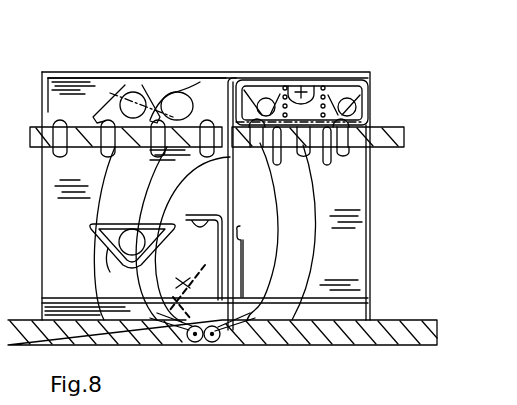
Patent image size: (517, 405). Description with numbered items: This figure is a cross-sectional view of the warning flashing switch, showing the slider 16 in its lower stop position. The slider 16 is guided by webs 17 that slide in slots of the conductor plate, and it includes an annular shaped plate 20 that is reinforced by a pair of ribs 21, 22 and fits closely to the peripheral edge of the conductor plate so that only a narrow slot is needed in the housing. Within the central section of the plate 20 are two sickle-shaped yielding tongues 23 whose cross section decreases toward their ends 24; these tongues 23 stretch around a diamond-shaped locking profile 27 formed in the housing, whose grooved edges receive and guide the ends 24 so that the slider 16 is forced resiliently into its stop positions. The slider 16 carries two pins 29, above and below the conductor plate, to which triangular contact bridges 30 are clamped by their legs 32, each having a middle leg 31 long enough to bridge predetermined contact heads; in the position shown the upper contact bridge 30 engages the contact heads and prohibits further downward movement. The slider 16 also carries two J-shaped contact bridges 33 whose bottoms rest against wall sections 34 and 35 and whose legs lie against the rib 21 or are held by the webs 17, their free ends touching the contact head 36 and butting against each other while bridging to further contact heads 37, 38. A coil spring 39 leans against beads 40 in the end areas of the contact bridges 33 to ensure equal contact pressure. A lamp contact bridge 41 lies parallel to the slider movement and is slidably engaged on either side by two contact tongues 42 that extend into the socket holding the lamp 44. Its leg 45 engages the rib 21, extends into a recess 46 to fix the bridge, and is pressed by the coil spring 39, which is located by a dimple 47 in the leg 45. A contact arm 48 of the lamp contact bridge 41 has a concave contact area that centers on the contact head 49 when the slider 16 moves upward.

The slider 16 is at (110, 72).
The webs 17 is at (357, 125).
The annular shaped plate 20 is at (52, 240).
The rib 21 is at (175, 78).
The rib 22 is at (68, 305).
The sickle-shaped yielding tongues 23 is at (216, 232).
The ends 24 is at (212, 345).
The diamond-shaped locking profile 27 is at (184, 286).
The pins 29 is at (133, 95).
The contact bridges 30 is at (110, 108).
The middle leg 31 is at (132, 222).
The legs 32 is at (140, 255).
The contact bridges 33 is at (357, 124).
The wall section 34 is at (372, 103).
The wall section 35 is at (185, 101).
The contact head 36 is at (302, 142).
The contact head 37 is at (353, 150).
The contact head 38 is at (259, 155).
The coil spring 39 is at (325, 95).
The beads 40 is at (280, 123).
The lamp contact bridge 41 is at (234, 213).
The contact tongues 42 is at (225, 272).
The lamp 44 is at (24, 196).
The leg 45 is at (265, 86).
The recess 46 is at (365, 80).
The dimple 47 is at (303, 84).
The contact arm 48 is at (200, 257).
The contact head 49 is at (195, 85).